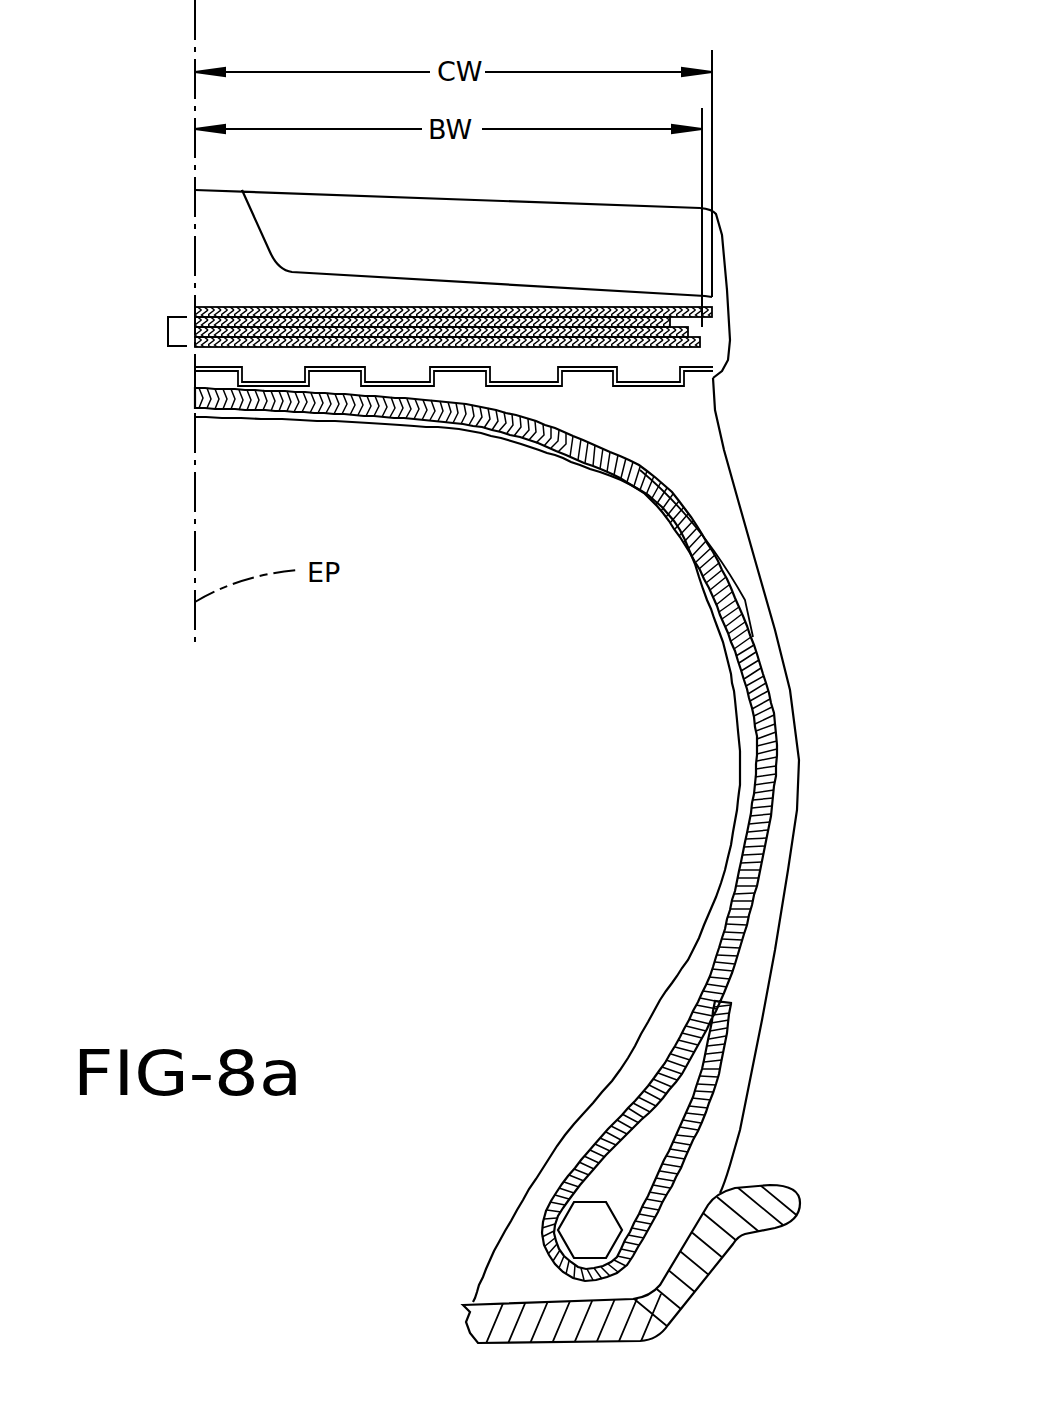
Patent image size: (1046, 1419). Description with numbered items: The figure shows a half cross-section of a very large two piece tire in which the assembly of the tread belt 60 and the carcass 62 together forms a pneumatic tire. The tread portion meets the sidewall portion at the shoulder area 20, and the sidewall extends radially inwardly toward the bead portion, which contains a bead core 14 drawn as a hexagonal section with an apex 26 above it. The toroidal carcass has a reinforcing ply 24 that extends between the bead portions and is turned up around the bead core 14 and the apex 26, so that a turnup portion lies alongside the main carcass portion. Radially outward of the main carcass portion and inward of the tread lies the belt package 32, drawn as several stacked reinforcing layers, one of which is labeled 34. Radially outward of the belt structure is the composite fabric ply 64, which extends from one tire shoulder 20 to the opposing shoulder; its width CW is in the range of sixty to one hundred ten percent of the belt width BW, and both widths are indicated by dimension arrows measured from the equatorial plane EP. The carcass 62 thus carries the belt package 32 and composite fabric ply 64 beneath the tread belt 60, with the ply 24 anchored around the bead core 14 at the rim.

The bead core 14 is at (590, 1228).
The shoulder area 20 is at (712, 338).
The reinforcing ply 24 is at (767, 838).
The apex 26 is at (660, 1130).
The belt package 32 is at (386, 411).
The belt 34 is at (528, 340).
The tread belt 60 is at (215, 218).
The carcass 62 is at (743, 815).
The composite fabric ply 64 is at (237, 305).